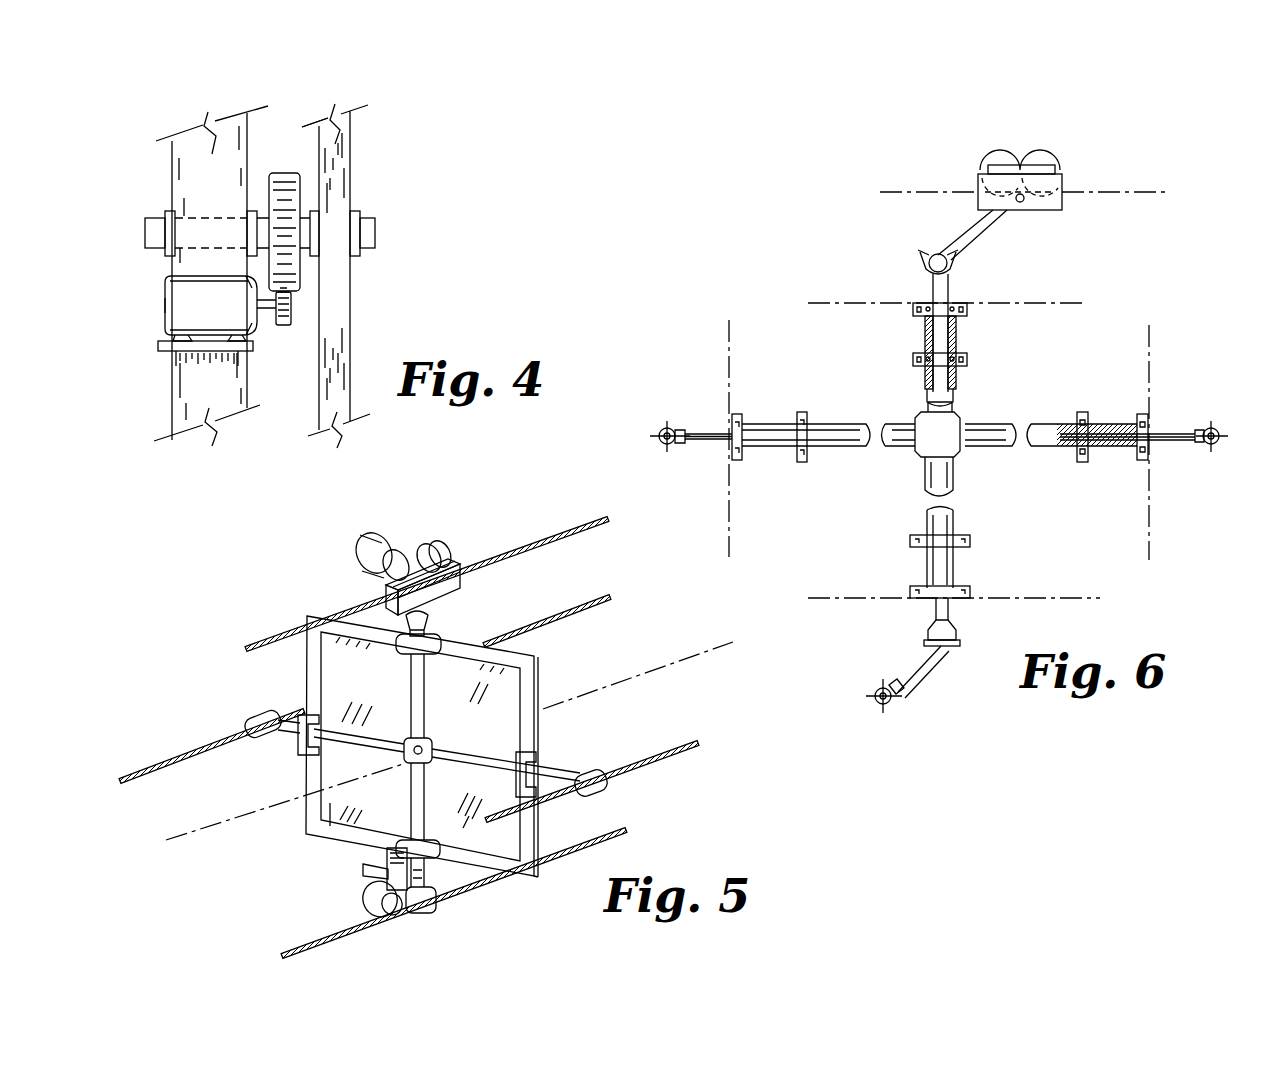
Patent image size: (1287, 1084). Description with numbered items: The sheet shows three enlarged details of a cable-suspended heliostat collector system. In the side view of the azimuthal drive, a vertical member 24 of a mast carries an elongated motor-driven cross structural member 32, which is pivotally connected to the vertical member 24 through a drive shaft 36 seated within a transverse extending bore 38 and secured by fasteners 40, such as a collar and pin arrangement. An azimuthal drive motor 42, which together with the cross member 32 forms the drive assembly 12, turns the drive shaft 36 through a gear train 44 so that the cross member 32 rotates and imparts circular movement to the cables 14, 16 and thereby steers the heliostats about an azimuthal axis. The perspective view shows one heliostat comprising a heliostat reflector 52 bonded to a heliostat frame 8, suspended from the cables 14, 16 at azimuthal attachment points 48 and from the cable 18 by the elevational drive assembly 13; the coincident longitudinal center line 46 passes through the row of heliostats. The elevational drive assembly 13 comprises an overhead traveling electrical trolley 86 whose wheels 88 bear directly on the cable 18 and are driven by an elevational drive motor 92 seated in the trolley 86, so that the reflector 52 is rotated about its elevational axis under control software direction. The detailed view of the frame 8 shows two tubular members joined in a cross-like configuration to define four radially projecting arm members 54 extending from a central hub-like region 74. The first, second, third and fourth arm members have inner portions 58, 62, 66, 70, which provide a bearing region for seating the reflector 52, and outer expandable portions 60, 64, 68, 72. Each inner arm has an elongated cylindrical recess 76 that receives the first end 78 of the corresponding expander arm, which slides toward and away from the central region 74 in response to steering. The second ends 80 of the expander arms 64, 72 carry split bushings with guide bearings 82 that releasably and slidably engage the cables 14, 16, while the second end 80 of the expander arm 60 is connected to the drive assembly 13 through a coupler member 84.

In FIG. 5, the heliostat frame 8 is at (552, 758).
In FIG. 4, the drive assembly 12 is at (144, 293).
In FIG. 5, the elevational drive assembly 13 is at (408, 560).
In FIG. 6, the elevational drive assembly 13 is at (1008, 164).
In FIG. 5, the cable 14 is at (560, 607).
In FIG. 5, the cable 16 is at (675, 737).
In FIG. 4, the cable 18 is at (344, 289).
In FIG. 5, the cable 18 is at (247, 632).
In FIG. 4, the vertical member 24 is at (212, 163).
In FIG. 4, the cross structural member 32 is at (344, 142).
In FIG. 4, the drive shaft 36 is at (137, 232).
In FIG. 4, the transverse extending bore 38 is at (200, 210).
In FIG. 4, the fasteners 40 is at (160, 204).
In FIG. 4, the azimuthal drive motor 42 is at (212, 306).
In FIG. 4, the gear train 44 is at (273, 165).
In FIG. 5, the center line 46 is at (166, 822).
In FIG. 5, the azimuthal attachment points 48 is at (237, 720).
In FIG. 5, the heliostat reflector 52 is at (460, 713).
In FIG. 6, the arm members 54 is at (908, 514).
In FIG. 6, the inner arm portion 58 is at (955, 407).
In FIG. 6, the outer expandable arm portion 60 is at (948, 296).
In FIG. 6, the inner arm portion 62 is at (982, 444).
In FIG. 6, the outer expandable arm portion 64 is at (1163, 422).
In FIG. 6, the inner arm portion 66 is at (918, 472).
In FIG. 6, the outer expandable arm portion 68 is at (934, 600).
In FIG. 6, the inner arm portion 70 is at (838, 422).
In FIG. 6, the outer expandable arm portion 72 is at (782, 422).
In FIG. 6, the central region 74 is at (937, 429).
In FIG. 6, the cylindrical recess 76 is at (923, 393).
In FIG. 6, the first end 78 is at (958, 372).
In FIG. 6, the second end 80 is at (930, 275).
In FIG. 6, the split bushings and guide bearings 82 is at (1211, 417).
In FIG. 6, the coupler member 84 is at (958, 261).
In FIG. 5, the overhead traveling electrical trolley 86 is at (440, 582).
In FIG. 6, the overhead traveling electrical trolley 86 is at (973, 172).
In FIG. 5, the wheels 88 is at (438, 540).
In FIG. 6, the wheels 88 is at (1052, 155).
In FIG. 5, the elevational drive motor 92 is at (375, 531).